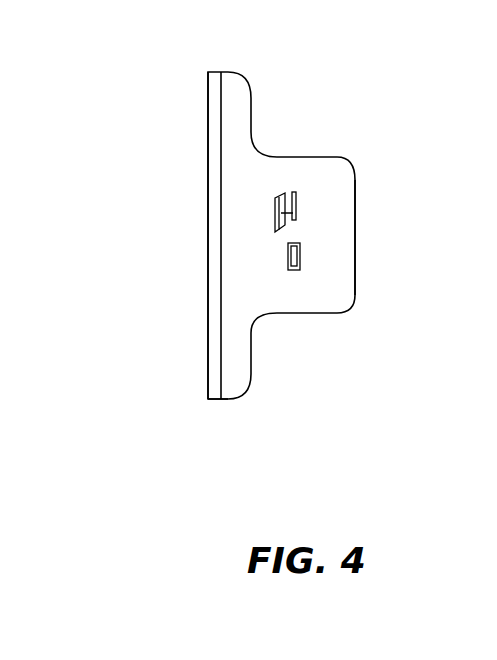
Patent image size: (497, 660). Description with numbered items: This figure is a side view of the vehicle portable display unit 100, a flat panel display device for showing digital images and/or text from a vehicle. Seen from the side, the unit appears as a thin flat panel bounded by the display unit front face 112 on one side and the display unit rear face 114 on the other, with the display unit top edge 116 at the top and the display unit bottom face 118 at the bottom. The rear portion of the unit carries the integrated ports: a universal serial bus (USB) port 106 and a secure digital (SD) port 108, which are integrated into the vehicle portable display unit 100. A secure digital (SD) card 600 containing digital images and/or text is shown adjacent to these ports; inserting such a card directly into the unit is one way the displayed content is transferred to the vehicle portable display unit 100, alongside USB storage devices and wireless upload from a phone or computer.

The vehicle portable display unit 100 is at (139, 99).
The universal serial bus (USB) port 106 is at (301, 257).
The secure digital (SD) port 108 is at (296, 204).
The display unit front face 112 is at (207, 222).
The display unit rear face 114 is at (357, 198).
The display unit top edge 116 is at (221, 72).
The display unit bottom face 118 is at (221, 399).
The secure digital (SD) card 600 is at (297, 215).